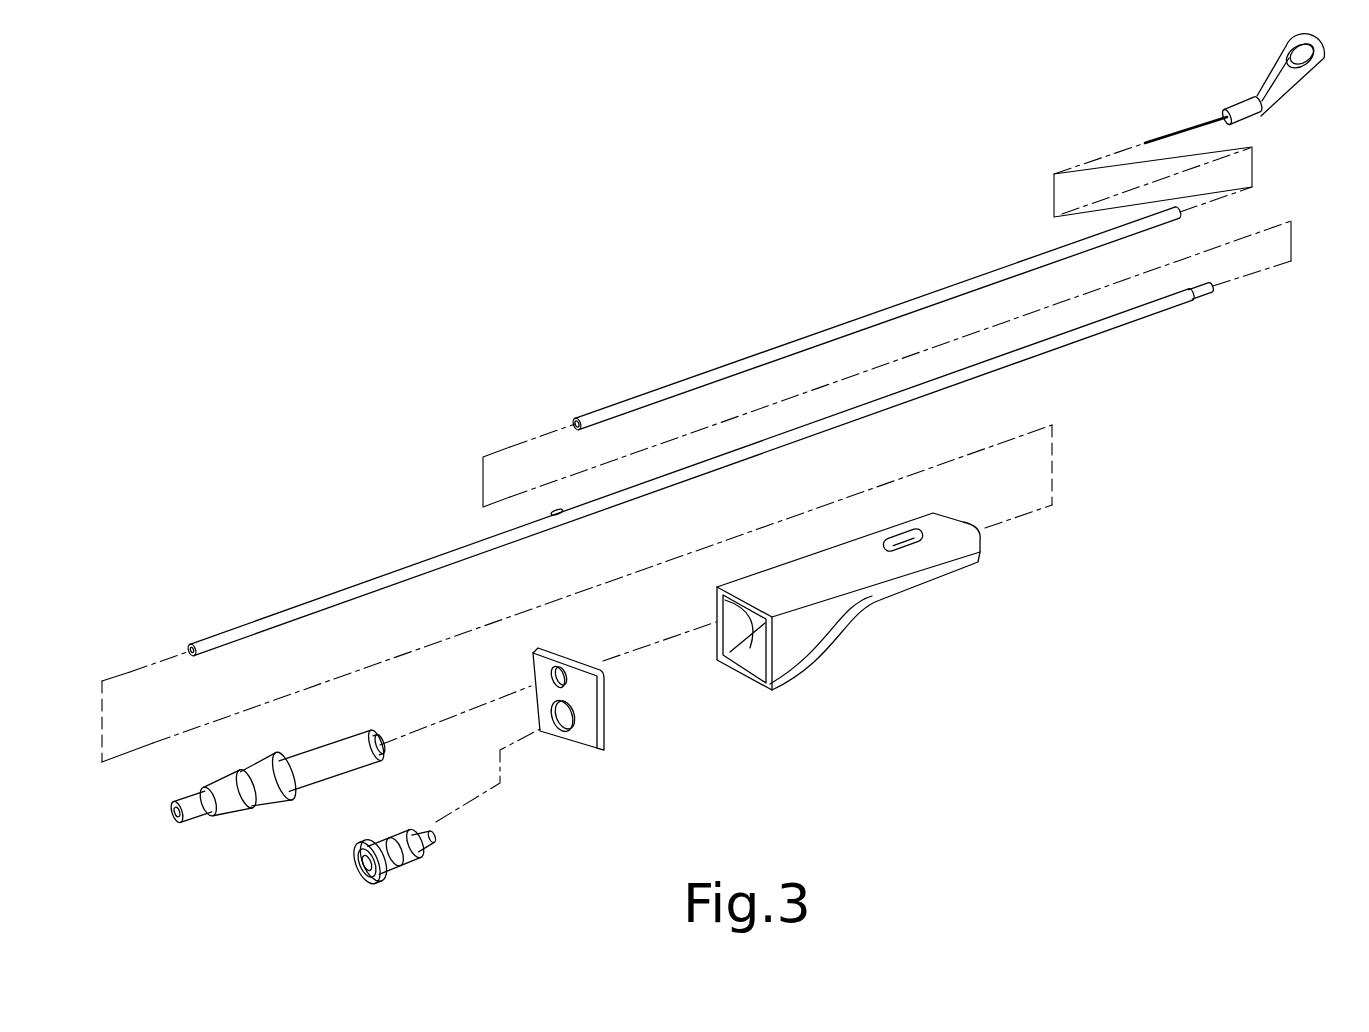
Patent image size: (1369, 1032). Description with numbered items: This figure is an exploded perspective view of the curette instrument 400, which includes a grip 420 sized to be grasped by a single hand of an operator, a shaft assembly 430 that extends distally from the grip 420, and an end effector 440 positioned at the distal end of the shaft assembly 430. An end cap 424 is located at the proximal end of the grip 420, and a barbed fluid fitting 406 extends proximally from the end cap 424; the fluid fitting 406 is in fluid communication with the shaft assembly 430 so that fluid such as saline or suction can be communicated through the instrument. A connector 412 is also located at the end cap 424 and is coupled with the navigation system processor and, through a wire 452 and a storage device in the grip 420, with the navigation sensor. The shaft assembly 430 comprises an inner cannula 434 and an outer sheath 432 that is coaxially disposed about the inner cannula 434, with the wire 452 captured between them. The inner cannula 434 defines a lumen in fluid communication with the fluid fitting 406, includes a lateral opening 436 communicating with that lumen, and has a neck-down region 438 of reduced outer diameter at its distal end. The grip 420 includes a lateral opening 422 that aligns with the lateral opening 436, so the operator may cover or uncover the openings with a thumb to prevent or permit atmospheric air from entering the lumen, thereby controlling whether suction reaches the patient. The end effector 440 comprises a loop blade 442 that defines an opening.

The curette instrument 400 is at (351, 178).
The fluid fitting 406 is at (308, 778).
The connector 412 is at (407, 877).
The grip 420 is at (855, 645).
The lateral opening 422 is at (908, 532).
The end cap 424 is at (580, 738).
The shaft assembly 430 is at (596, 330).
The outer sheath 432 is at (920, 300).
The inner cannula 434 is at (918, 396).
The lateral opening 436 is at (560, 512).
The neck-down region 438 is at (1207, 304).
The end effector 440 is at (1270, 48).
The loop blade 442 is at (1300, 78).
The wire 452 is at (1190, 126).